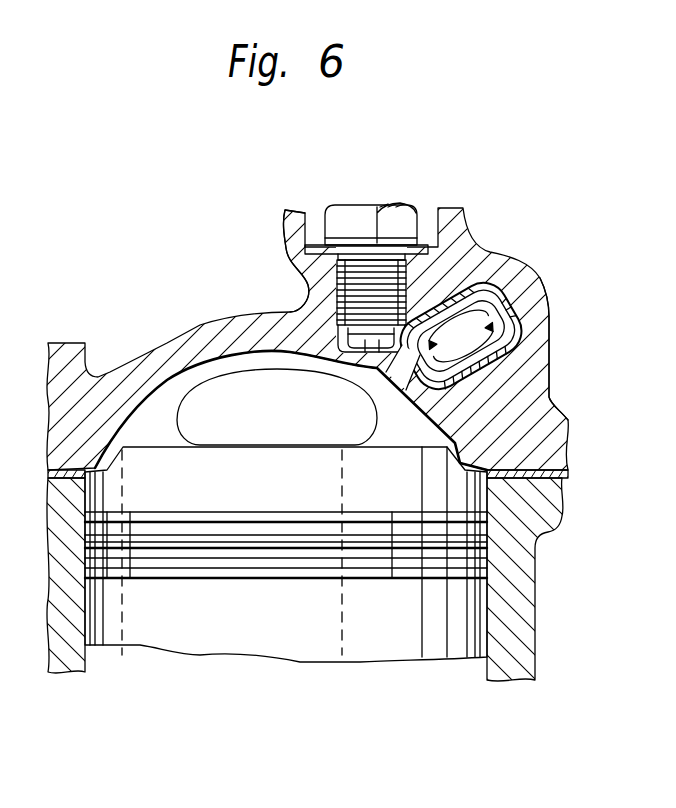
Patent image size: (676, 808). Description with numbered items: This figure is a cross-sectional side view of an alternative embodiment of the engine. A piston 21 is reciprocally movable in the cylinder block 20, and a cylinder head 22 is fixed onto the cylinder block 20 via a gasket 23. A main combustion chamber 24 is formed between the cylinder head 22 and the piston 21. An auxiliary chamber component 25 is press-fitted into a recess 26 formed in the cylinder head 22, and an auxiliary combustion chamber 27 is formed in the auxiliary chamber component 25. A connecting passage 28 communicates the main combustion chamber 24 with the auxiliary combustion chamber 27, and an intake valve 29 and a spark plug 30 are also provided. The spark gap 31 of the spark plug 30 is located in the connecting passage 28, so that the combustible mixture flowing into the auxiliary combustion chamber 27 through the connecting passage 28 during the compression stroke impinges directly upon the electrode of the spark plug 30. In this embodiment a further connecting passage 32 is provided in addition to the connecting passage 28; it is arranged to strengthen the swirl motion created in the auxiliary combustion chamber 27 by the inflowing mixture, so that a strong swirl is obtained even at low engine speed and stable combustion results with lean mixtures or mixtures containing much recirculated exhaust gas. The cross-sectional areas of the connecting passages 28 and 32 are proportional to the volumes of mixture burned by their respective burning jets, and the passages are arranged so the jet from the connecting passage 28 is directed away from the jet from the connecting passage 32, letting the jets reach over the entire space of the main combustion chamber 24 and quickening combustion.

The cylinder block 20 is at (522, 568).
The piston 21 is at (378, 492).
The cylinder head 22 is at (227, 330).
The gasket 23 is at (567, 471).
The main combustion chamber 24 is at (403, 370).
The auxiliary chamber component 25 is at (495, 292).
The recess 26 is at (457, 257).
The auxiliary combustion chamber 27 is at (475, 352).
The connecting passage 28 is at (300, 366).
The intake valve 29 is at (220, 397).
The spark plug 30 is at (360, 285).
The spark gap 31 is at (291, 209).
The further connecting passage 32 is at (553, 402).